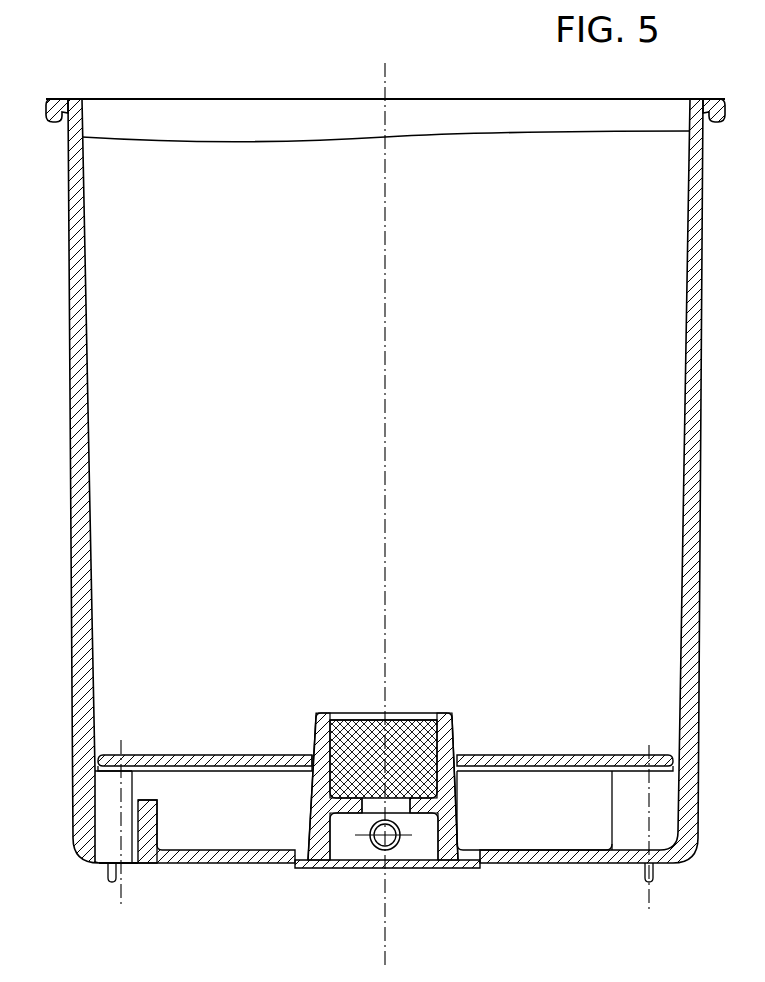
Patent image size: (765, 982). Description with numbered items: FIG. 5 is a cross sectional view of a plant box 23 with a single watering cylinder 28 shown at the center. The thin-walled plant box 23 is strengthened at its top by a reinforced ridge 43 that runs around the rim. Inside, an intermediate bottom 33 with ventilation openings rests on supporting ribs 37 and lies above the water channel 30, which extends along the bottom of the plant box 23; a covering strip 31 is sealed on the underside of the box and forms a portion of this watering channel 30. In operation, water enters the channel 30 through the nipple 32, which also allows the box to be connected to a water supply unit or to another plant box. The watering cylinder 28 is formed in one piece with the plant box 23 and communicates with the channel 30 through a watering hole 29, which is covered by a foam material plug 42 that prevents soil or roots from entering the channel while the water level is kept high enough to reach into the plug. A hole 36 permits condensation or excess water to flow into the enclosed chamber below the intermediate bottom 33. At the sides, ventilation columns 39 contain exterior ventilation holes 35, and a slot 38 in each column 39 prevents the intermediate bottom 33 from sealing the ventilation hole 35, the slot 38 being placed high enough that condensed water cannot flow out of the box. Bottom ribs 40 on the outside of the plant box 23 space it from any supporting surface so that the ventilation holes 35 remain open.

The plant box 23 is at (78, 212).
The rim lip 43 is at (62, 96).
The intermediate bottom 33 is at (560, 760).
The slot 38 is at (150, 779).
The ventilation column 39 is at (150, 835).
The ventilation hole 35 is at (125, 858).
The bottom rib 40 is at (657, 880).
The supporting rib 37 is at (628, 825).
The watering cylinder 28 is at (447, 733).
The foam material plug 42 is at (395, 733).
The water hole 29 is at (377, 805).
The water supply channel 30 is at (422, 845).
The covering strip 31 is at (422, 867).
The nipple 32 is at (378, 840).
The hole 36 is at (312, 758).